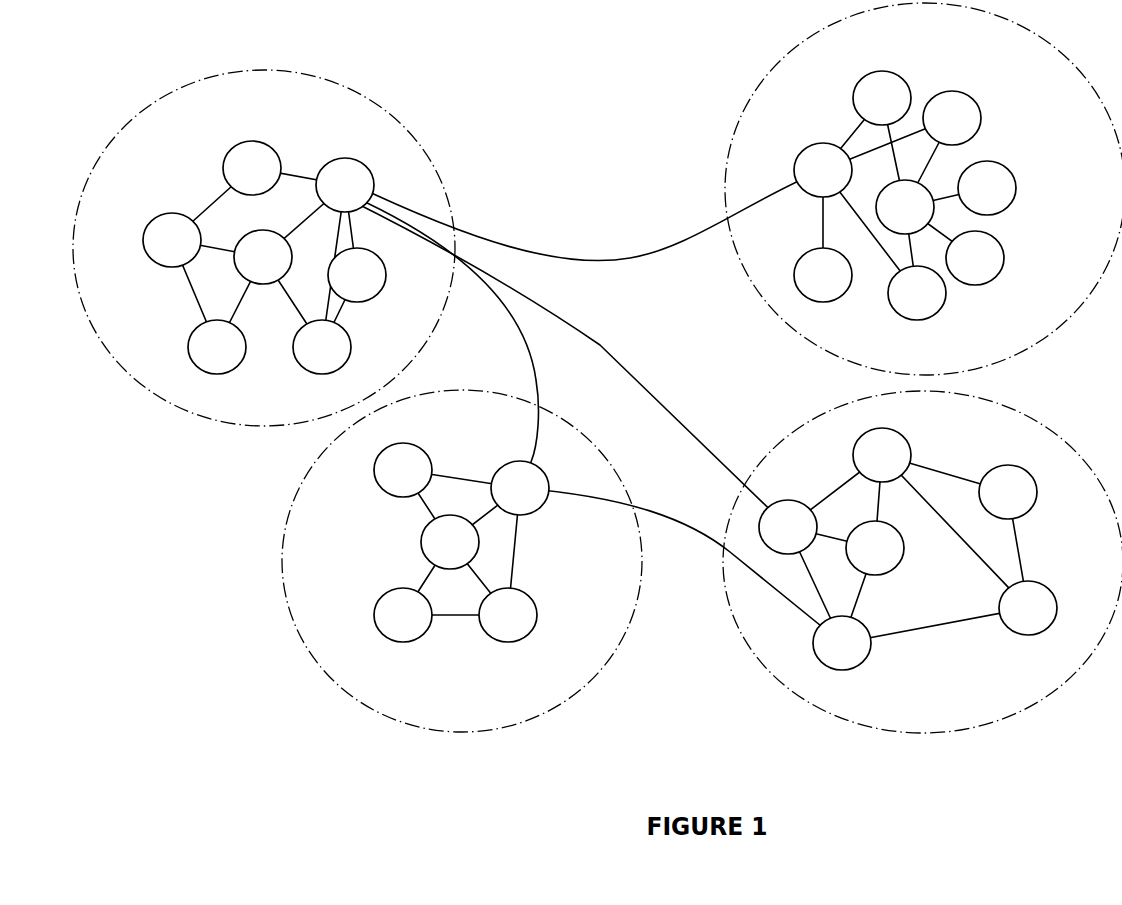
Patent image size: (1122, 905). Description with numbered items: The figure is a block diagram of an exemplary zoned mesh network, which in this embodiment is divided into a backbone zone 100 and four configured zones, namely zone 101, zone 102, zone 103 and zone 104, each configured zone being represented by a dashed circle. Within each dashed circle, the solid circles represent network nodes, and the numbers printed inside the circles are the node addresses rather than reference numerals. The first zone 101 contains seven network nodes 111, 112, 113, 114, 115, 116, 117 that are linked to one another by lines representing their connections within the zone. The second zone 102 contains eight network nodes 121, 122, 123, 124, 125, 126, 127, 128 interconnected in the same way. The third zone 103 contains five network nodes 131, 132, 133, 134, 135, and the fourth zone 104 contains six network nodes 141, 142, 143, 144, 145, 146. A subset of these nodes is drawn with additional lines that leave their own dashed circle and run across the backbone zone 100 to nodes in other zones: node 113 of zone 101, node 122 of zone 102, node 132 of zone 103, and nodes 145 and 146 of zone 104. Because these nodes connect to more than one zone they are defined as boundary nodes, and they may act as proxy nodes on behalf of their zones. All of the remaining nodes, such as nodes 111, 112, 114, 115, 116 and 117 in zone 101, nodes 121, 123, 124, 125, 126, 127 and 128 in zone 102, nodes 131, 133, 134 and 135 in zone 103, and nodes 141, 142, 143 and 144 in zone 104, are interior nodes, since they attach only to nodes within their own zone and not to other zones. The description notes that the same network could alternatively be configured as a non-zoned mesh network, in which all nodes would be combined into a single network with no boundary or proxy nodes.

The backbone zone 100 is at (613, 235).
The zone 101 is at (354, 89).
The zone 102 is at (756, 85).
The zone 103 is at (288, 513).
The zone 104 is at (757, 658).
The network node 111 is at (374, 298).
The network node 112 is at (253, 244).
The network node 113 is at (344, 157).
The network node 114 is at (227, 153).
The network node 115 is at (142, 245).
The network node 116 is at (188, 347).
The network node 117 is at (306, 371).
The network node 121 is at (892, 74).
The network node 122 is at (805, 148).
The network node 123 is at (935, 314).
The network node 124 is at (896, 197).
The network node 125 is at (1018, 187).
The network node 126 is at (1005, 263).
The network node 127 is at (982, 116).
The network node 128 is at (833, 302).
The network node 131 is at (381, 632).
The network node 132 is at (503, 465).
The network node 133 is at (532, 634).
The network node 134 is at (381, 491).
The network node 135 is at (422, 546).
The network node 141 is at (899, 436).
The network node 142 is at (1033, 503).
The network node 143 is at (898, 567).
The network node 144 is at (1055, 594).
The network node 145 is at (860, 665).
The network node 146 is at (798, 500).